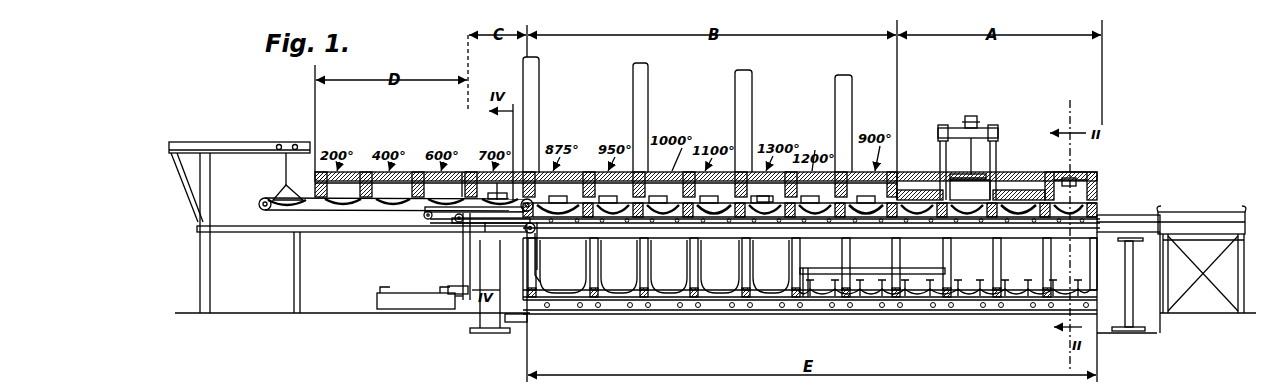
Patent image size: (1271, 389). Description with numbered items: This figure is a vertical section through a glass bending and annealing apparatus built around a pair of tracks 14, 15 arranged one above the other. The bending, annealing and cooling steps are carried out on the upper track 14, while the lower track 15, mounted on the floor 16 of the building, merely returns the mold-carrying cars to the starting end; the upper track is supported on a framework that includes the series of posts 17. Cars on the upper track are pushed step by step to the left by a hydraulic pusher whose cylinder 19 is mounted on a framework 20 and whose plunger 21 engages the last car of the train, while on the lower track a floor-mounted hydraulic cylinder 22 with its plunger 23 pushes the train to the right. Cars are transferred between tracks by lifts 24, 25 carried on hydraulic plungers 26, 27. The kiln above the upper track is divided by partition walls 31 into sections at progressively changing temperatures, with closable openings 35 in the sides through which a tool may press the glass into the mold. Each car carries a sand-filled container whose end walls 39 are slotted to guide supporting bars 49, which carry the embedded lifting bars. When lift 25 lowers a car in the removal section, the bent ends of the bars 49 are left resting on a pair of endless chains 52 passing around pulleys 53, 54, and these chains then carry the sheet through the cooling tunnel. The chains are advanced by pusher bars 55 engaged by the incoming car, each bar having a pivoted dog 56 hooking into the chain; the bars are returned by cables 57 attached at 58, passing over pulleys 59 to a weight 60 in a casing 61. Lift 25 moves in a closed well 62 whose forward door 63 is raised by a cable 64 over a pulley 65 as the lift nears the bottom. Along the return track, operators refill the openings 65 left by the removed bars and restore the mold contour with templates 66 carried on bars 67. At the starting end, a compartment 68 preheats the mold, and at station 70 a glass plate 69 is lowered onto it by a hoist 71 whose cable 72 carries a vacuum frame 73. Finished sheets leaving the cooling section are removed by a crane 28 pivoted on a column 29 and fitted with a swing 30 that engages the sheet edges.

The upper track 14 is at (876, 227).
The lower track 15 is at (665, 304).
The floor 16 is at (784, 314).
The posts 17 is at (688, 264).
The cylinder 19 is at (1196, 216).
The framework 20 is at (1162, 314).
The plunger 21 is at (1125, 216).
The hydraulic cylinder 22 is at (415, 306).
The plunger 23 is at (455, 307).
The lift 24 is at (1120, 233).
The lift 25 is at (490, 232).
The hydraulic plunger 26 is at (1130, 293).
The hydraulic plunger 27 is at (503, 318).
The crane 28 is at (254, 142).
The column 29 is at (205, 183).
The swing 30 is at (283, 181).
The partition walls 31 is at (644, 180).
The openings 35 is at (763, 196).
The end walls 39 is at (929, 212).
The supporting bar 49 is at (955, 293).
The endless chains 52 is at (345, 212).
The pulley 53 is at (265, 212).
The pulley 54 is at (536, 210).
The pusher bars 55 is at (500, 194).
The pivoted dog 56 is at (424, 214).
The cables 57 is at (463, 251).
The attachment point 58 is at (428, 212).
The pulleys 59 is at (462, 171).
The weight 60 is at (452, 291).
The casing 61 is at (462, 268).
The well 62 is at (485, 315).
The door 63 is at (534, 272).
The cable 64 is at (536, 268).
The pulley 65 is at (536, 233).
The templates 66 is at (800, 275).
The bars 67 is at (808, 270).
The compartment 68 is at (1068, 192).
The glass plate 69 is at (986, 177).
The station 70 is at (976, 195).
The hoist 71 is at (977, 117).
The cable 72 is at (973, 153).
The vacuum frame 73 is at (958, 177).